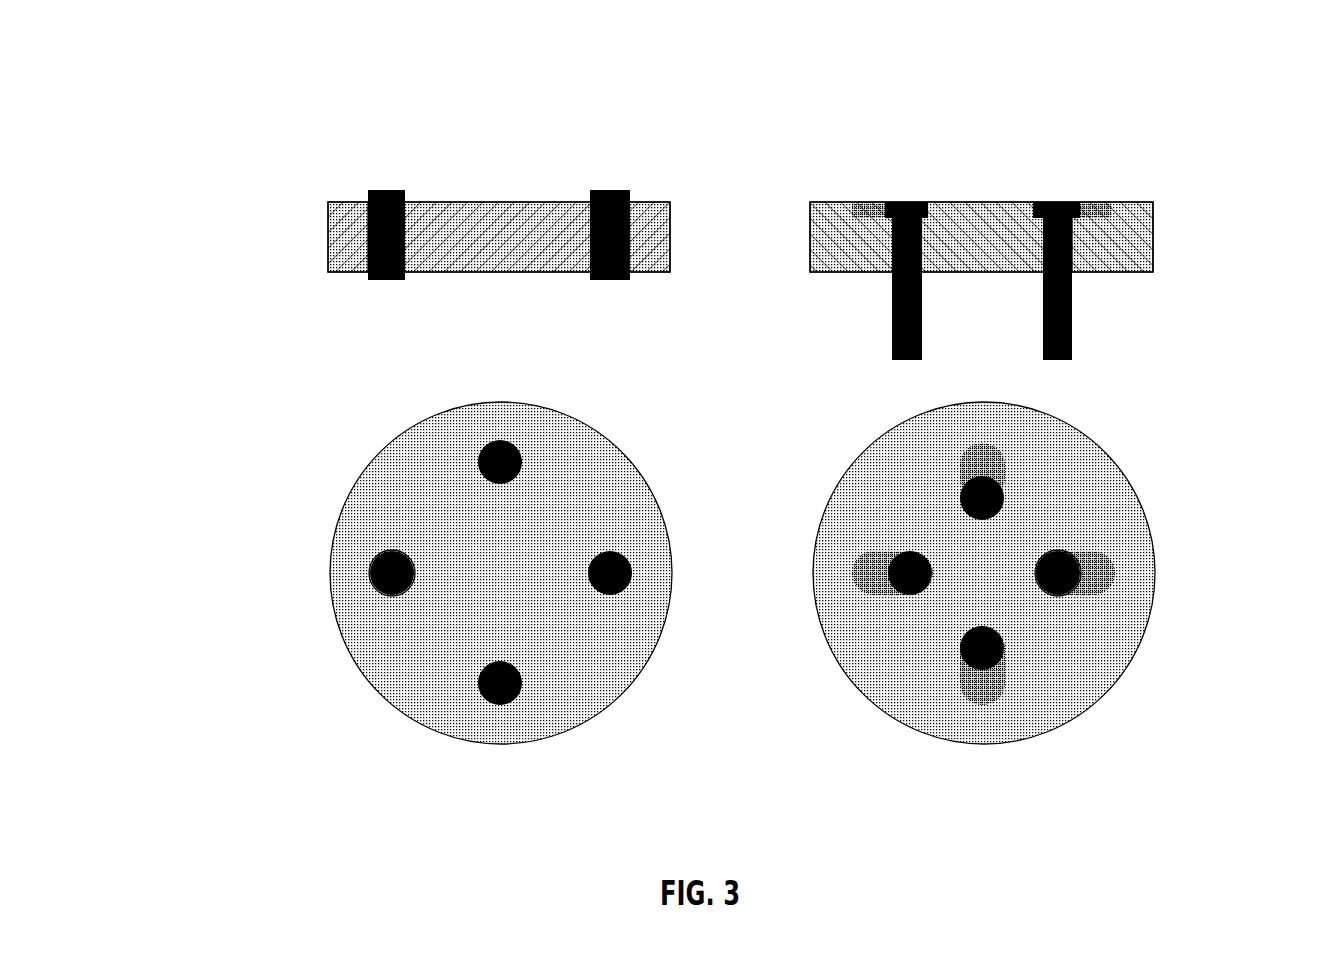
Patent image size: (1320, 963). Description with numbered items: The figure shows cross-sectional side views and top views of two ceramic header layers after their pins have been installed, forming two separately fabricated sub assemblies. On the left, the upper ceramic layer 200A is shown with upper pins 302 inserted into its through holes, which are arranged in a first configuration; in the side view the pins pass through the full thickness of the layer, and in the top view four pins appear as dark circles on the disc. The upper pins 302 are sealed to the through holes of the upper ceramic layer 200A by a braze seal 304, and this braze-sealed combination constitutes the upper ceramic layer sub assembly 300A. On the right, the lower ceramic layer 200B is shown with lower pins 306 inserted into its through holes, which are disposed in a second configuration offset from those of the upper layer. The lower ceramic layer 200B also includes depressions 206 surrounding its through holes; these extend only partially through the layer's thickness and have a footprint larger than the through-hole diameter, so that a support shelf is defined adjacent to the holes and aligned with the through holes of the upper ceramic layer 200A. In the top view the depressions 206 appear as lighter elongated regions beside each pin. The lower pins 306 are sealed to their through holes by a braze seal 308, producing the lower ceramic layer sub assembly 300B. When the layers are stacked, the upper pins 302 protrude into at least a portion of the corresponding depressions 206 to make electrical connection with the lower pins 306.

The upper ceramic layer sub assembly 300A is at (494, 76).
The upper ceramic layer 200A is at (493, 183).
The upper pins 302 is at (622, 555).
The braze seal 304 is at (382, 555).
The lower ceramic layer sub assembly 300B is at (969, 76).
The lower ceramic layer 200B is at (978, 183).
The lower pins 306 is at (965, 487).
The depressions 206 is at (990, 462).
The braze seal 308 is at (1078, 272).